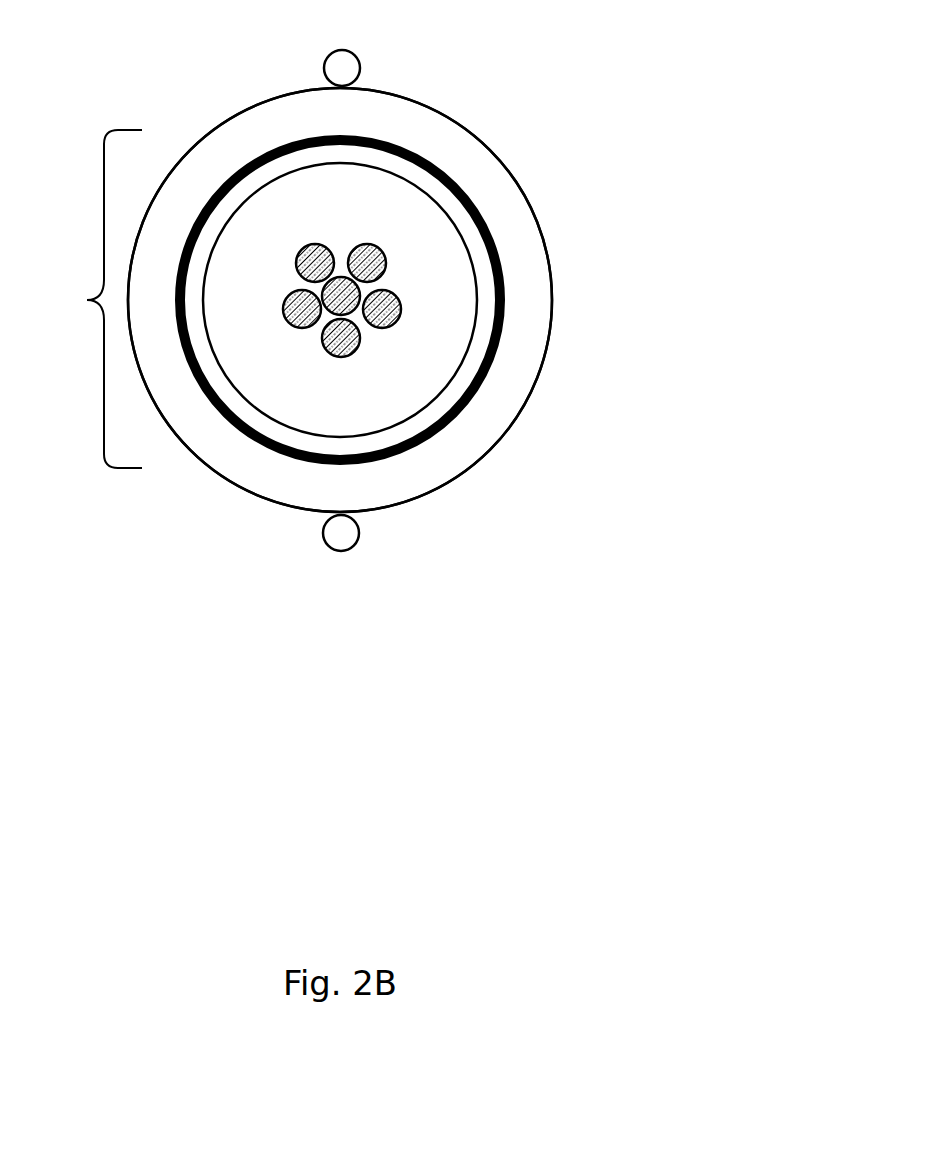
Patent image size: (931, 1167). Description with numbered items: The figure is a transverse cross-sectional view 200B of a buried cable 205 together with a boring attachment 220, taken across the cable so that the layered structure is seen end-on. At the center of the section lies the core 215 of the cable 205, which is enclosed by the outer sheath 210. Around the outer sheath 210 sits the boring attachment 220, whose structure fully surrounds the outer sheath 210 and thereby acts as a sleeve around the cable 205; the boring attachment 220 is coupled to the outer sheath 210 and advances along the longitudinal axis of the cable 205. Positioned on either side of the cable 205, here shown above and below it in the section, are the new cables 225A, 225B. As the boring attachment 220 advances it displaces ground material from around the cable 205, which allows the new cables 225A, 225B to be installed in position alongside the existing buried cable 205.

The transverse cross-sectional view 200B is at (674, 733).
The cable 205 is at (298, 300).
The outer sheath 210 is at (478, 209).
The core 215 is at (395, 277).
The boring attachment 220 is at (483, 142).
The new cable 225A is at (362, 68).
The new cable 225B is at (360, 532).